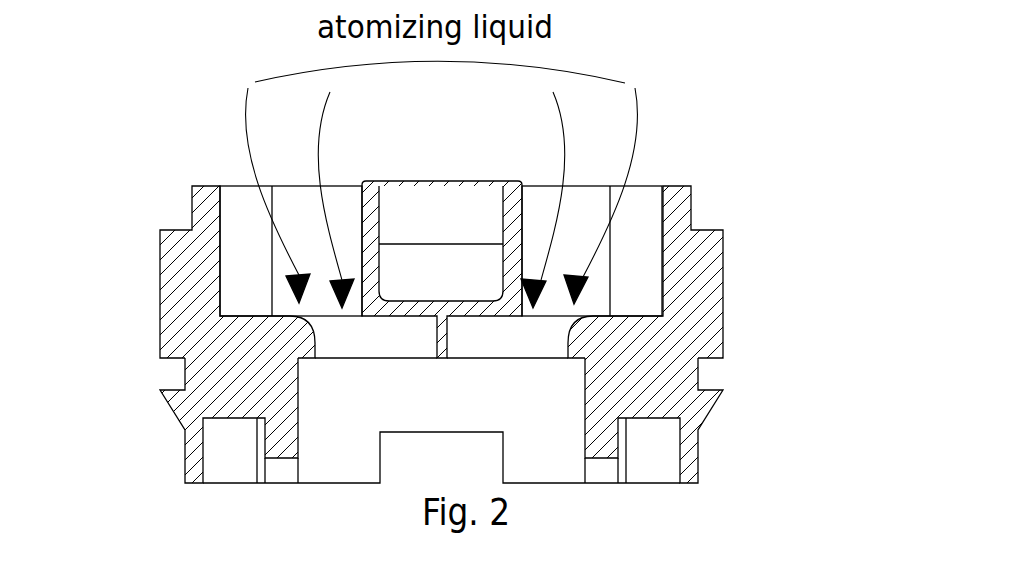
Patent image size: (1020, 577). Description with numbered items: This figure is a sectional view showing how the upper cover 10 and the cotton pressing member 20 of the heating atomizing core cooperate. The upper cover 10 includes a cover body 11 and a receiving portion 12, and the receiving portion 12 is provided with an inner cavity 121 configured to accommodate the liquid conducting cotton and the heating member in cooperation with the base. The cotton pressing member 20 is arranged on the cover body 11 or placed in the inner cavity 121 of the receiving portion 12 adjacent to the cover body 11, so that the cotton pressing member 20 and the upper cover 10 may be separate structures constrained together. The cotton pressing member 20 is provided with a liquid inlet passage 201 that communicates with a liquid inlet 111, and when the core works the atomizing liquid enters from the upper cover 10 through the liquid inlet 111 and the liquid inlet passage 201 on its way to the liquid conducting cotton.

The upper cover 10 is at (534, 334).
The cover body 11 is at (496, 272).
The receiving portion 12 is at (496, 404).
The liquid inlet 111 is at (595, 248).
The inner cavity 121 is at (530, 400).
The cotton pressing member 20 is at (437, 342).
The liquid inlet passage 201 is at (357, 341).